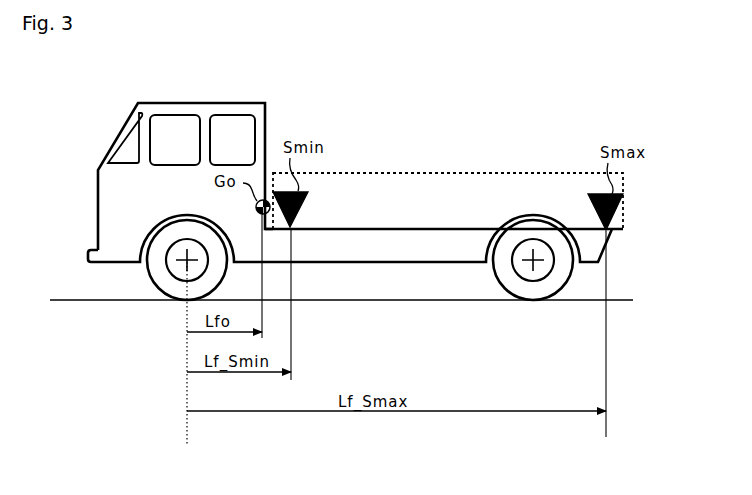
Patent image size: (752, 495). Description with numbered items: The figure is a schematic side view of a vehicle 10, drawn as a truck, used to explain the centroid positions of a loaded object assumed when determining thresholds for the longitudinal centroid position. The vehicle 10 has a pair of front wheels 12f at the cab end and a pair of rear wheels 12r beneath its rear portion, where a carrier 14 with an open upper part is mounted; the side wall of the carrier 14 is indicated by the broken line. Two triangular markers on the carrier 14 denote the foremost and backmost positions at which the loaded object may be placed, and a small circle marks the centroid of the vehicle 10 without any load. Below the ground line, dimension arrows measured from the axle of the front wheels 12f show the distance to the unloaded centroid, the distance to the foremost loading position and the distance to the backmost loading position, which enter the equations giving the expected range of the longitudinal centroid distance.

The vehicle 10 is at (104, 131).
The front wheels 12f is at (150, 278).
The rear wheels 12r is at (498, 286).
The carrier 14 is at (443, 174).